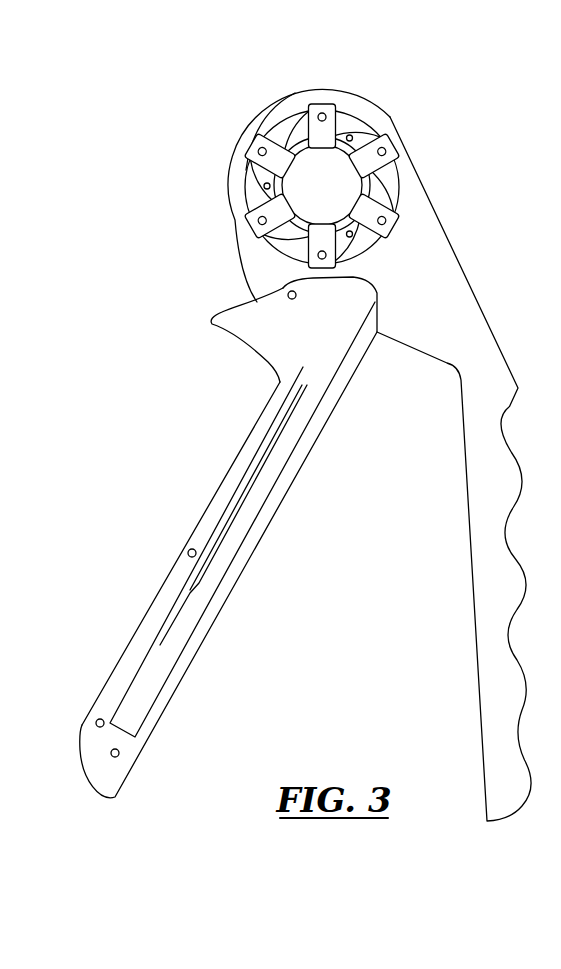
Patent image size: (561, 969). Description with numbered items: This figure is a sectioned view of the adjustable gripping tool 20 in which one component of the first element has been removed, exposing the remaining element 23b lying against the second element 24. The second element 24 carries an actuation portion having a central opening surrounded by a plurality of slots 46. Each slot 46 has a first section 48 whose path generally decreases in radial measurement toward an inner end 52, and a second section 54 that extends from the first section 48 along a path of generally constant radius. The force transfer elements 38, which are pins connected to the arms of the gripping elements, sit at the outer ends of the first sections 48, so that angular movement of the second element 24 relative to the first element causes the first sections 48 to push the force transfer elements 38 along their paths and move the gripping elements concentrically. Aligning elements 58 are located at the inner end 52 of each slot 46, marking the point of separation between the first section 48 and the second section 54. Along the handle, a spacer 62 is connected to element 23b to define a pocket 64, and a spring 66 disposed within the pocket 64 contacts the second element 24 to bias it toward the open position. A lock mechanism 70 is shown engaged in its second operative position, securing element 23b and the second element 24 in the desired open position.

The adjustable gripping tool 20 is at (216, 122).
The element of the first element 23b is at (272, 400).
The second element 24 is at (487, 350).
The force transfer element 38 is at (258, 148).
The slot 46 is at (240, 166).
The first section 48 is at (246, 150).
The inner end 52 is at (262, 300).
The second section 54 is at (264, 200).
The aligning element 58 is at (266, 185).
The spacer 62 is at (95, 752).
The pocket 64 is at (285, 453).
The spring 66 is at (308, 387).
The lock mechanism 70 is at (222, 351).